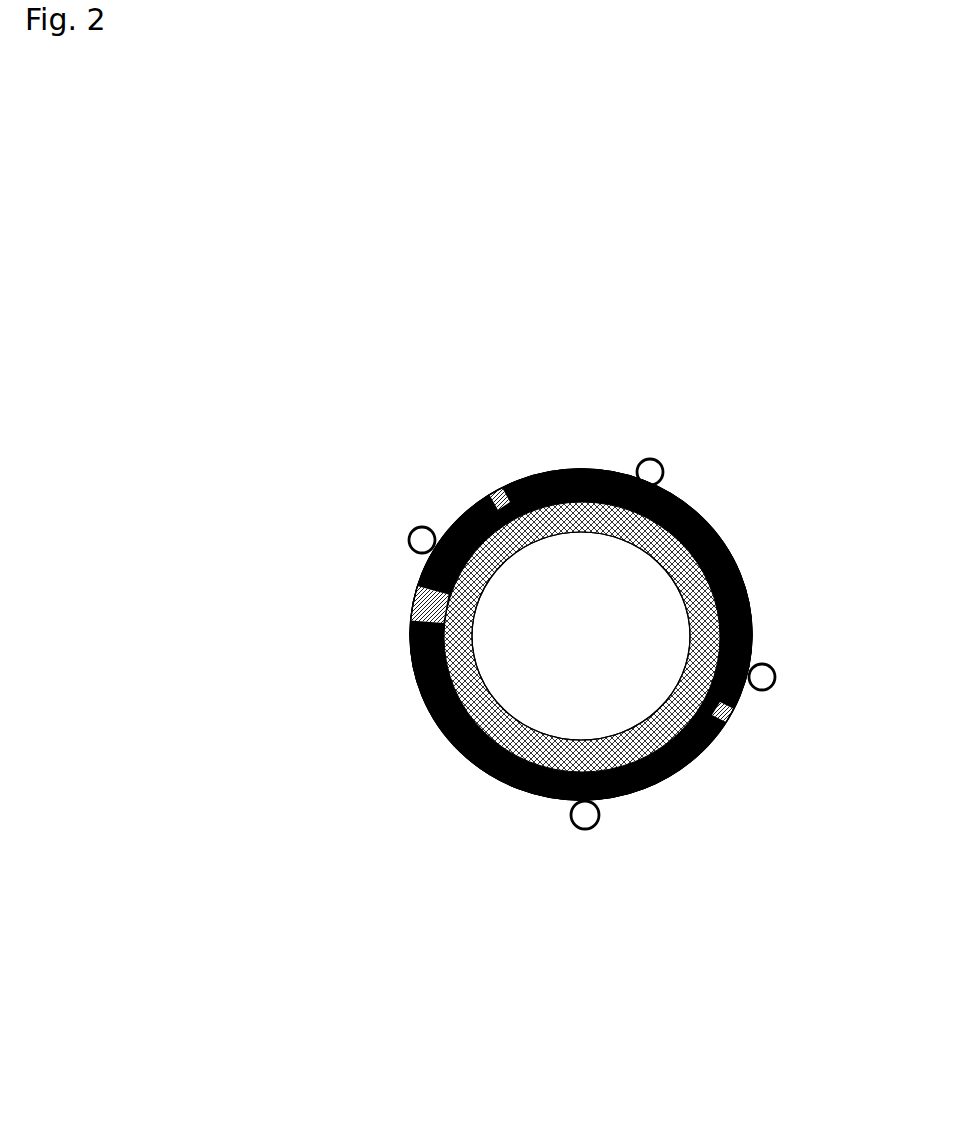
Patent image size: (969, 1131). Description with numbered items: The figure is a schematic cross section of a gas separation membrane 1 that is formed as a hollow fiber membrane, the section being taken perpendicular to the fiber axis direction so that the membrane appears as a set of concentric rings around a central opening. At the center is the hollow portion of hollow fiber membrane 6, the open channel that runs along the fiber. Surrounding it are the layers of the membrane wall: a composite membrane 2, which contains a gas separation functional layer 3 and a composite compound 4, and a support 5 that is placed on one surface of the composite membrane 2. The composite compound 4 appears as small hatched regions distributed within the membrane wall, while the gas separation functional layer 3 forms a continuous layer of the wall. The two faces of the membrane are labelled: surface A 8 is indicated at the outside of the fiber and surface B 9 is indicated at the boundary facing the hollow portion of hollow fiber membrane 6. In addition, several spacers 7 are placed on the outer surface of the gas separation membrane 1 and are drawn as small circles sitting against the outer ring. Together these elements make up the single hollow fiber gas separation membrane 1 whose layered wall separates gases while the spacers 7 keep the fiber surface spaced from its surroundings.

The gas separation membrane 1 is at (528, 611).
The composite membrane 2 is at (218, 626).
The gas separation functional layer 3 is at (414, 675).
The composite compound 4 is at (498, 493).
The support 5 is at (693, 613).
The hollow portion of hollow fiber membrane 6 is at (581, 636).
The spacer 7 is at (588, 825).
The surface A 8 is at (509, 830).
The surface B 9 is at (558, 707).